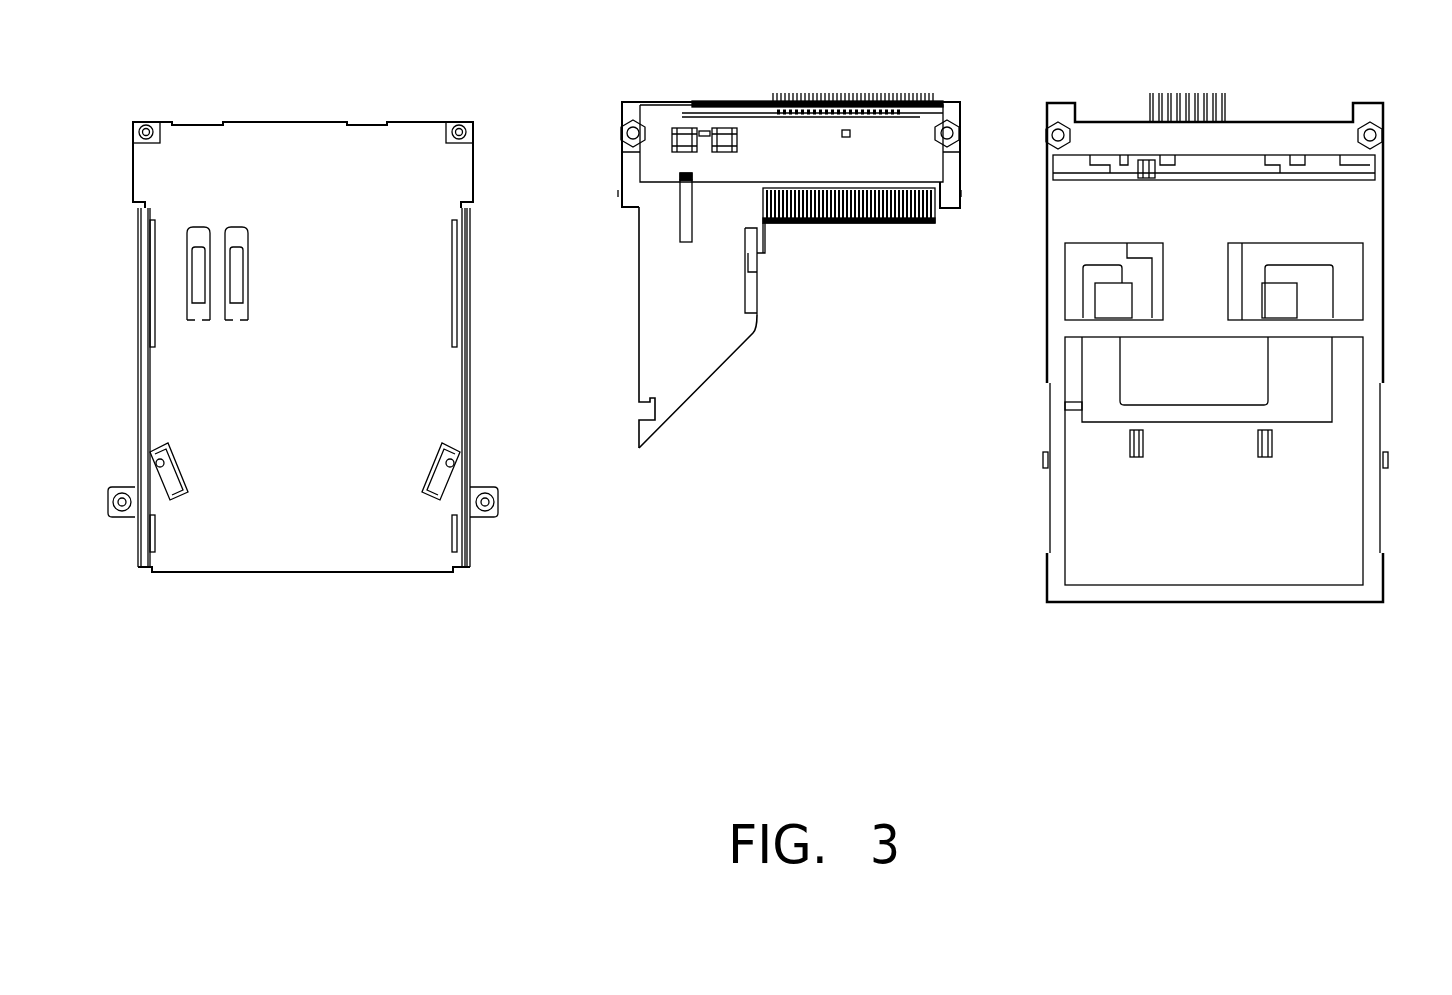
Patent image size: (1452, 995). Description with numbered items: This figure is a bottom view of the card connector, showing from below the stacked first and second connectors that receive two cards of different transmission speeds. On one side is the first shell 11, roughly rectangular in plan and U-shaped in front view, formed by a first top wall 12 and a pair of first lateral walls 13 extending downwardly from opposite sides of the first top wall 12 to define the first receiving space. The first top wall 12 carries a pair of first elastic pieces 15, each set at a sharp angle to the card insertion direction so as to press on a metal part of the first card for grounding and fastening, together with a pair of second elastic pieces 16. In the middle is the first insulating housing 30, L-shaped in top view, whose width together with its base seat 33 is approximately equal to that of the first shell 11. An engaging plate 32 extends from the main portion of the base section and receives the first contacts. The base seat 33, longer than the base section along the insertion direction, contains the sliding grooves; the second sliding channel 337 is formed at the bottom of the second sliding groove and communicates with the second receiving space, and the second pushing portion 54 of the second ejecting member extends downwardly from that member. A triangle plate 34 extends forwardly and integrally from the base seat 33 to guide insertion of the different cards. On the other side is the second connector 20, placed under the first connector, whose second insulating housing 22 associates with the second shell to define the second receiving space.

The first shell 11 is at (317, 488).
The first top wall 12 is at (288, 168).
The first lateral walls 13 is at (470, 243).
The first elastic pieces 15 is at (168, 476).
The second elastic pieces 16 is at (198, 272).
The second connector 20 is at (1338, 217).
The second insulating housing 22 is at (1208, 213).
The first insulating housing 30 is at (873, 152).
The engaging plate 32 is at (873, 217).
The base seat 33 is at (665, 292).
The triangle plate 34 is at (692, 373).
The second pushing portion 54 is at (687, 178).
The second sliding channel 337 is at (687, 213).